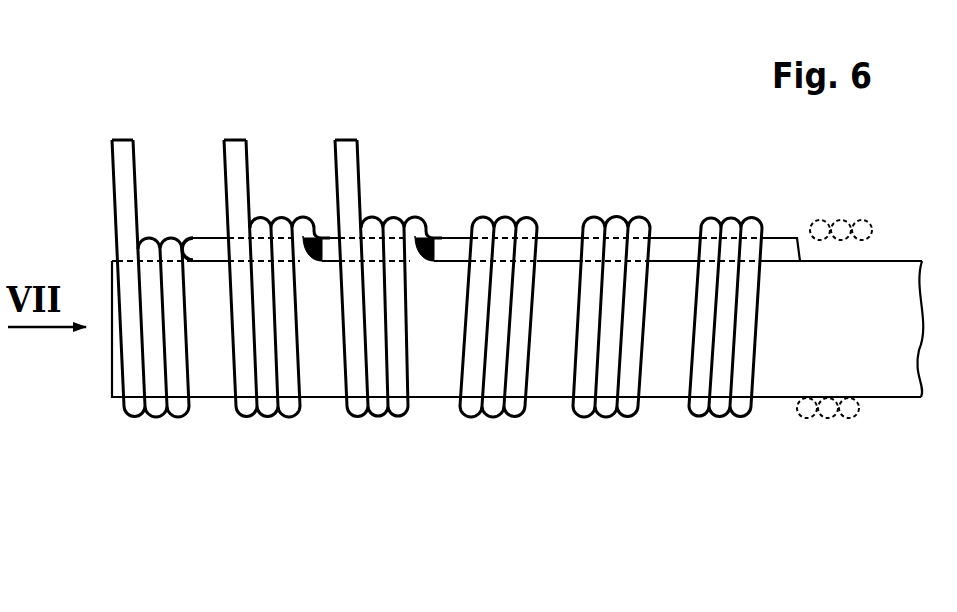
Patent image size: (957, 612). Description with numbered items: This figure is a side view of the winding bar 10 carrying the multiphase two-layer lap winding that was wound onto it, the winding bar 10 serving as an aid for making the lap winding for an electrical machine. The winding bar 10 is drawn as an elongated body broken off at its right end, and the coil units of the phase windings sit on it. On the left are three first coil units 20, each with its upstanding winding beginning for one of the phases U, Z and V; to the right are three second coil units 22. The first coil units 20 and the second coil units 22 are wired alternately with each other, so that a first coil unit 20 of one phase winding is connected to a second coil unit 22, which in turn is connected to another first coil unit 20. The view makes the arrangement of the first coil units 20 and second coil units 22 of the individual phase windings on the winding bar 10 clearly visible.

The winding bar 10 is at (887, 282).
The first coil unit 20 is at (125, 155).
The second coil unit 22 is at (503, 440).